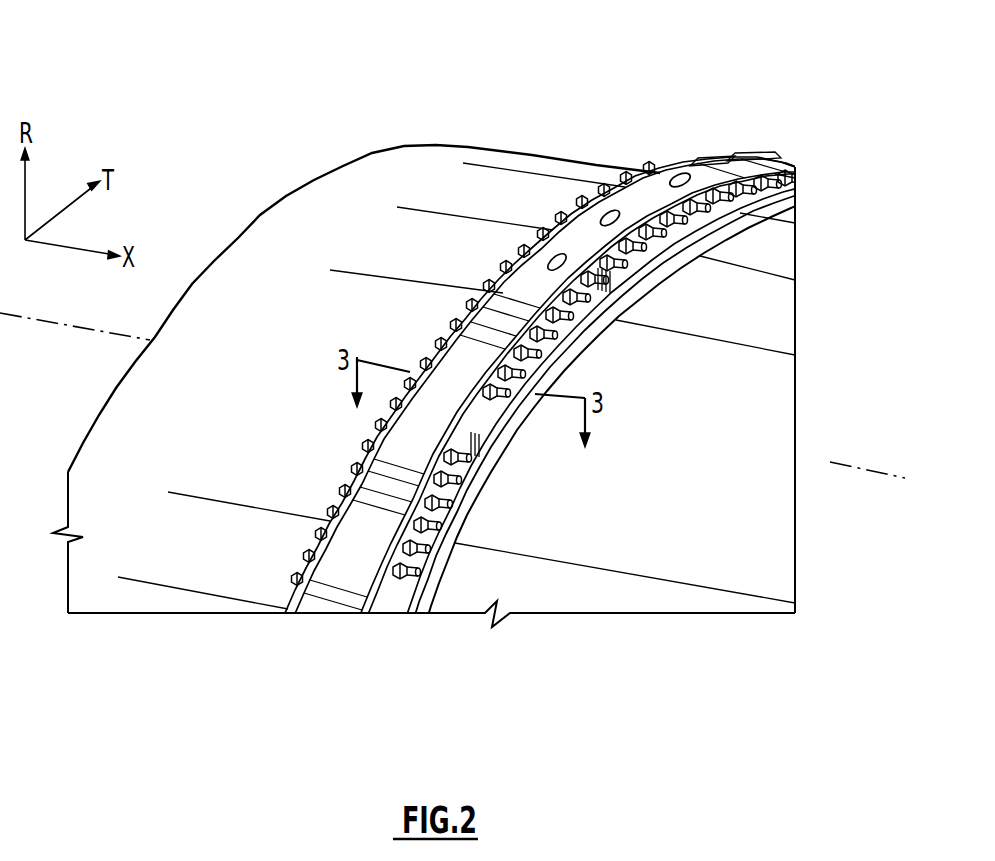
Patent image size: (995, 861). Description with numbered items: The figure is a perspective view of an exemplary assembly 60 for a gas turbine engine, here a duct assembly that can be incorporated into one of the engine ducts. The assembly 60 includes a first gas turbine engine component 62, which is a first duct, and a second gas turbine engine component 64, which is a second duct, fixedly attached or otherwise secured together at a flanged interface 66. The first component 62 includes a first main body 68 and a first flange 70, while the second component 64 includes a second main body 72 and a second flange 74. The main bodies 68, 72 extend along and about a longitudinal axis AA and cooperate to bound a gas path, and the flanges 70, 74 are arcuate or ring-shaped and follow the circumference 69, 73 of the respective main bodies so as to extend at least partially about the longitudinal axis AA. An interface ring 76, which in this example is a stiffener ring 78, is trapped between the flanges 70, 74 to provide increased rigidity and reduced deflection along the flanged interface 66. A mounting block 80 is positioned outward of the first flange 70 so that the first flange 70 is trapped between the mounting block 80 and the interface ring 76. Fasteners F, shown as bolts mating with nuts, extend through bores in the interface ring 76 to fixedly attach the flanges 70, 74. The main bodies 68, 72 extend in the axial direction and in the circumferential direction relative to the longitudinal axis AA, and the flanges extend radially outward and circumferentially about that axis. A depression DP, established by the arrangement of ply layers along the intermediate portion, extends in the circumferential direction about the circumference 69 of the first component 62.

The assembly 60 is at (140, 81).
The first gas turbine engine component 62 is at (812, 216).
The second gas turbine engine component 64 is at (553, 152).
The flanged interface 66 is at (795, 125).
The first main body 68 is at (780, 262).
The circumference 69 is at (790, 262).
The first flange 70 is at (795, 178).
The second main body 72 is at (285, 237).
The circumference 73 is at (250, 182).
The second flange 74 is at (508, 286).
The interface ring 76 is at (706, 160).
The stiffener ring 78 is at (750, 153).
The mounting block 80 is at (585, 338).
The fasteners F is at (502, 410).
The depression DP is at (427, 610).
The longitudinal axis AA is at (67, 328).